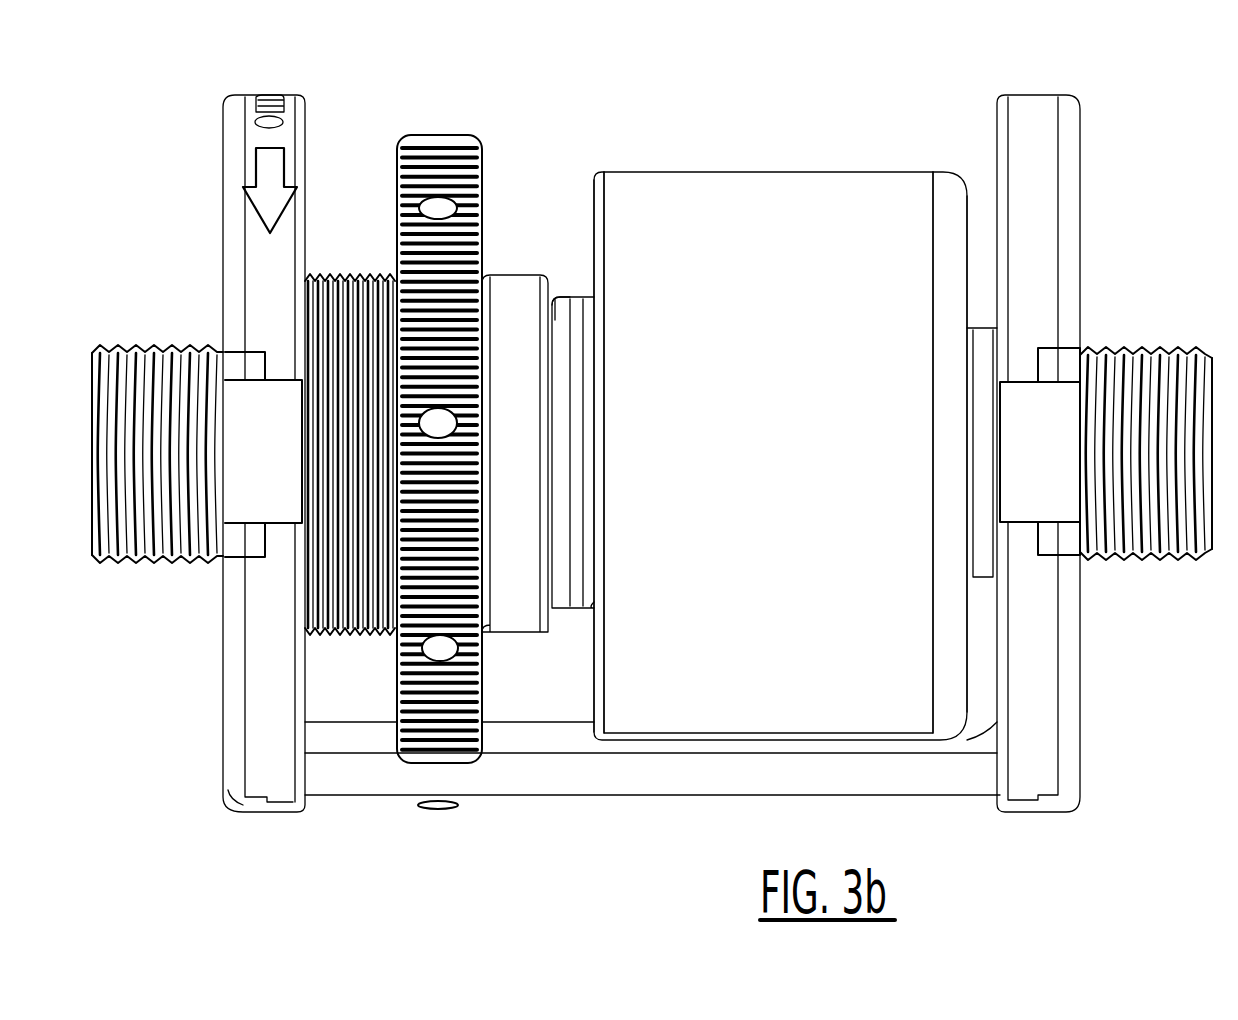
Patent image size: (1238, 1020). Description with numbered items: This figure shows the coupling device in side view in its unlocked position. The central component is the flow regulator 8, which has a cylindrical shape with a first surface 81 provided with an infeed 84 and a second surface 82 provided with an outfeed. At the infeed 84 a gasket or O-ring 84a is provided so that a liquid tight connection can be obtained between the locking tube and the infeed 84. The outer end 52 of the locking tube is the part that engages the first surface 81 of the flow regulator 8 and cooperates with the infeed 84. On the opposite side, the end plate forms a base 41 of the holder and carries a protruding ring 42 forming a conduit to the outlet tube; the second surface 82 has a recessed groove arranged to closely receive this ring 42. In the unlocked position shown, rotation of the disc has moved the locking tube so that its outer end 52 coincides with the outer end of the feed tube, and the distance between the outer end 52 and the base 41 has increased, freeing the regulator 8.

The flow regulator 8 is at (753, 200).
The first surface 81 is at (593, 236).
The second surface 82 is at (965, 276).
The infeed 84 is at (580, 585).
The gasket or O-ring 84a is at (558, 320).
The outer end of the locking tube 52 is at (515, 290).
The base 41 is at (995, 153).
The protruding ring 42 is at (985, 577).